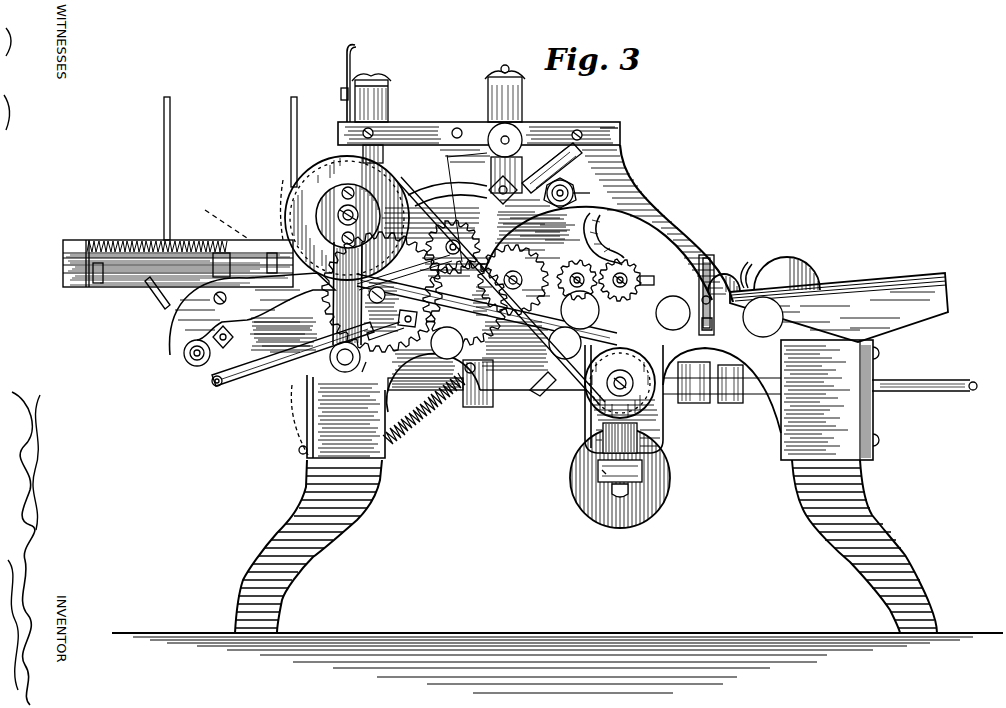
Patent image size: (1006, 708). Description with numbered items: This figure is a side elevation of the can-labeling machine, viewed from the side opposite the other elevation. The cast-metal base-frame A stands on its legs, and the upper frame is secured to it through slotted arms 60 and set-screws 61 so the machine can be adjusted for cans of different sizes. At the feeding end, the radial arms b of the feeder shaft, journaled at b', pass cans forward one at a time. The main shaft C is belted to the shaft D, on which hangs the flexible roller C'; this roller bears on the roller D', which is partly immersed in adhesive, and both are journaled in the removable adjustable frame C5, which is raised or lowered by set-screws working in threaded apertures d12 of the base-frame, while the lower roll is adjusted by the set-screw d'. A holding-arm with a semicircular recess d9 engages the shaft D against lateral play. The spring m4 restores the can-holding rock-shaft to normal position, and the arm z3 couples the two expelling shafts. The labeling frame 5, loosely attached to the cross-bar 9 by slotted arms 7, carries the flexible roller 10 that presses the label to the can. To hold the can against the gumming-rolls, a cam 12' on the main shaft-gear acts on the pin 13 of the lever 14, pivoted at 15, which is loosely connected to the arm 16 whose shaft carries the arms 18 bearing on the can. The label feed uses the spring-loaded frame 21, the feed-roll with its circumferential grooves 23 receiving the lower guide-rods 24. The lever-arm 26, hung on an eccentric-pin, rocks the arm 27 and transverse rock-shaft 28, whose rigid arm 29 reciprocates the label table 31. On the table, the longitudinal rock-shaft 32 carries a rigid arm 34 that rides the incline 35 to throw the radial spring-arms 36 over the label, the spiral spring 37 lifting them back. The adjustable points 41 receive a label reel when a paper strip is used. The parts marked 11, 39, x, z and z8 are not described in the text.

The frame 5 is at (524, 92).
The slotted arms 7 is at (514, 202).
The cross-bar 9 is at (609, 133).
The journaled roller 10 is at (535, 261).
The roller pin 11 is at (590, 187).
The cam 12' is at (449, 292).
The pin 13 is at (330, 250).
The lever 14 is at (462, 191).
The pivot 15 is at (165, 340).
The arm 16 is at (560, 193).
The arms 18 is at (618, 239).
The frame 21 is at (371, 108).
The circumferential grooves 23 is at (367, 378).
The lower guide-rods 24 is at (548, 378).
The lever-arm 26 is at (293, 354).
The arm 27 is at (213, 384).
The transverse rock-shaft 28 is at (188, 358).
The rigid arm 29 is at (150, 296).
The table 31 is at (72, 272).
The longitudinal rock-shaft 32 is at (270, 250).
The rigid arm 34 is at (222, 217).
The incline 35 is at (275, 203).
The radial spring-arms 36 is at (229, 168).
The spiral spring 37 is at (150, 242).
The rod 39 is at (345, 84).
The adjustable points 41 is at (211, 304).
The slotted arms 60 is at (711, 304).
The set-screws 61 is at (713, 320).
The base-frame A is at (872, 518).
The main shaft C is at (332, 300).
The flexible roller C' is at (722, 395).
The removable adjustable frame C5 is at (667, 466).
The shaft D is at (525, 304).
The roller D' is at (631, 436).
The set-screw d' is at (585, 505).
The semicircular recess d9 is at (616, 500).
The threaded apertures d12 is at (640, 442).
The spring m4 is at (675, 215).
The radial arms b is at (655, 274).
The journal b' is at (763, 317).
The shaft x is at (906, 398).
The roller z is at (556, 289).
The arm z3 is at (491, 389).
The spring z8 is at (424, 408).